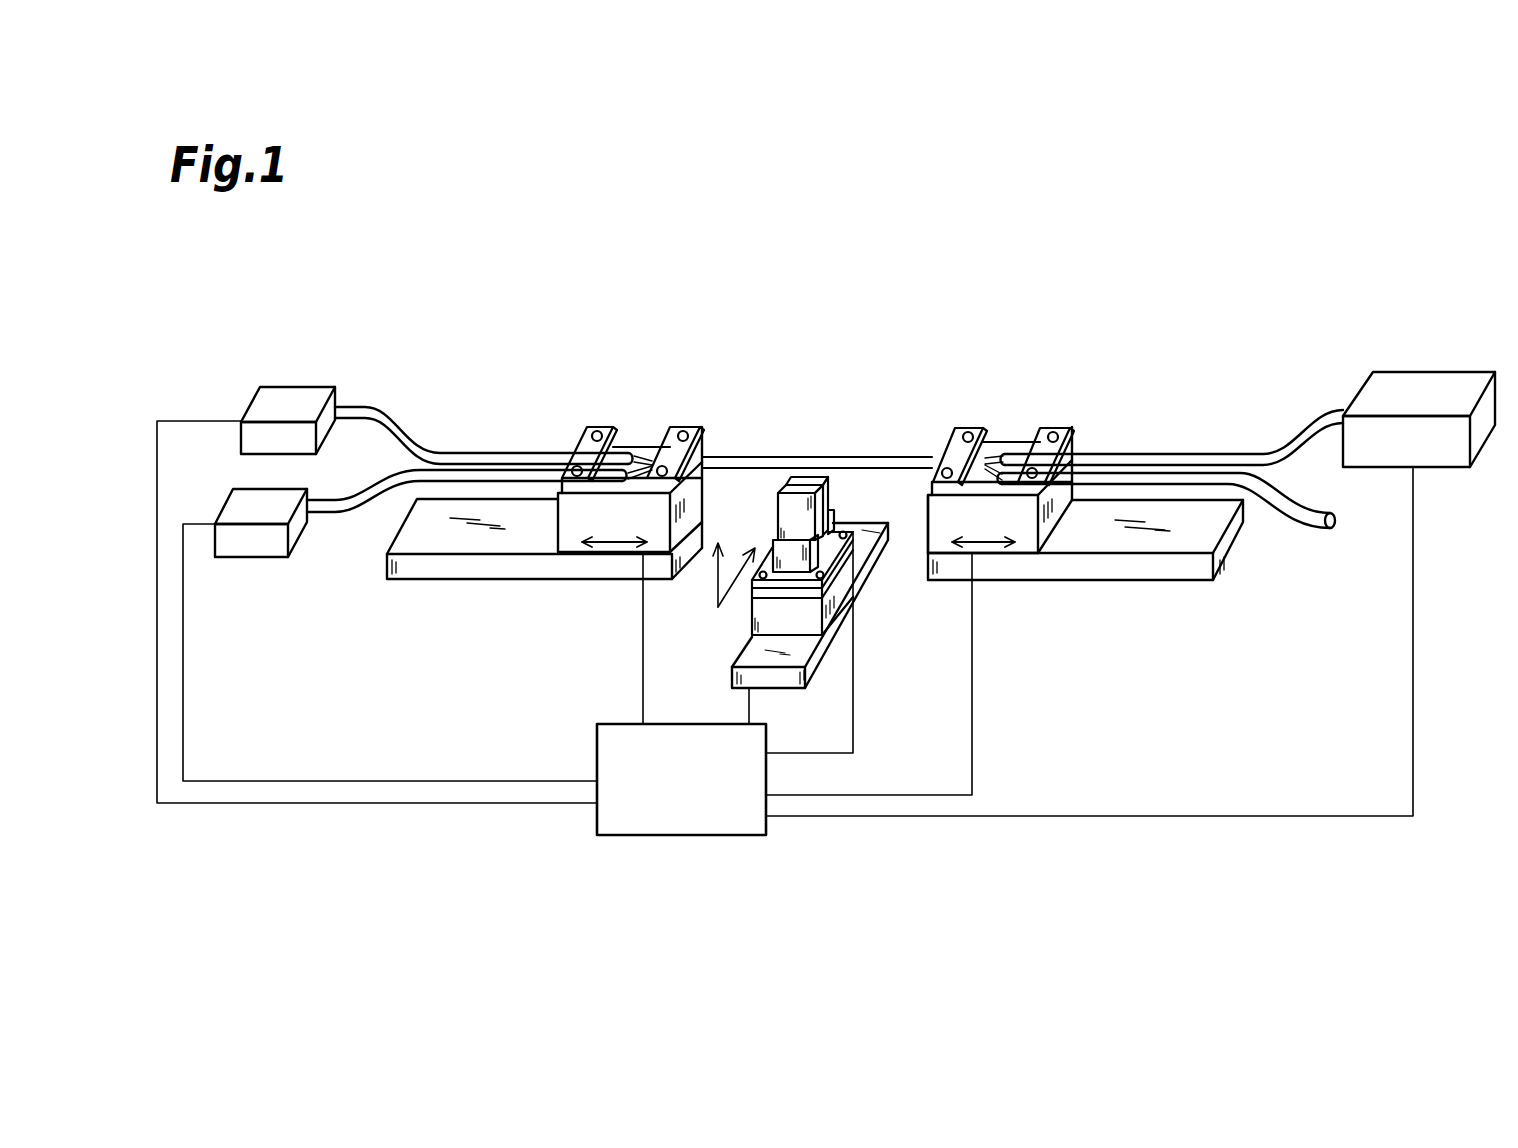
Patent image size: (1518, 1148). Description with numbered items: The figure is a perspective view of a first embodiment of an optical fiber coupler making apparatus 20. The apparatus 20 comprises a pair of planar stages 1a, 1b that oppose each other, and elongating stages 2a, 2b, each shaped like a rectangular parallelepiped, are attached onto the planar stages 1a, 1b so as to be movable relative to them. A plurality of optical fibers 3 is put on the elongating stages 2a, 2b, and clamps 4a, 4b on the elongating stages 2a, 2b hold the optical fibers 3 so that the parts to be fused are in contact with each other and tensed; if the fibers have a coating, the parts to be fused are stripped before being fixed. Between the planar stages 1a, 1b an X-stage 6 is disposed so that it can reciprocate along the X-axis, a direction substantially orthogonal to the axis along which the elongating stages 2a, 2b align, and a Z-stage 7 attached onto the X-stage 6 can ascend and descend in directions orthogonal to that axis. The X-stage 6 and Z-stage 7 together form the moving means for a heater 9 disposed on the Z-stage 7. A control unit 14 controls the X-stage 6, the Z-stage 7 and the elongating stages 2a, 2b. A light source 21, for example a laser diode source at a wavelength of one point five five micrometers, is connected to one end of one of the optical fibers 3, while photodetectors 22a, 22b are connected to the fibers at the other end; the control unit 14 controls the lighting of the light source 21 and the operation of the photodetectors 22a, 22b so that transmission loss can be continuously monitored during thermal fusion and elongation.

The optical fiber coupler making apparatus 20 is at (1000, 271).
The light source 21 is at (1415, 372).
The photodetector 22a is at (296, 387).
The photodetector 22b is at (247, 558).
The planar stage 1a is at (452, 567).
The planar stage 1b is at (1150, 567).
The elongating stage 2a is at (575, 535).
The elongating stage 2b is at (1030, 535).
The clamp 4a is at (600, 431).
The clamp 4b is at (971, 432).
The optical fibers 3 is at (792, 470).
The heater 9 is at (833, 504).
The X-stage 6 is at (752, 652).
The Z-stage 7 is at (838, 595).
The control unit 14 is at (708, 835).